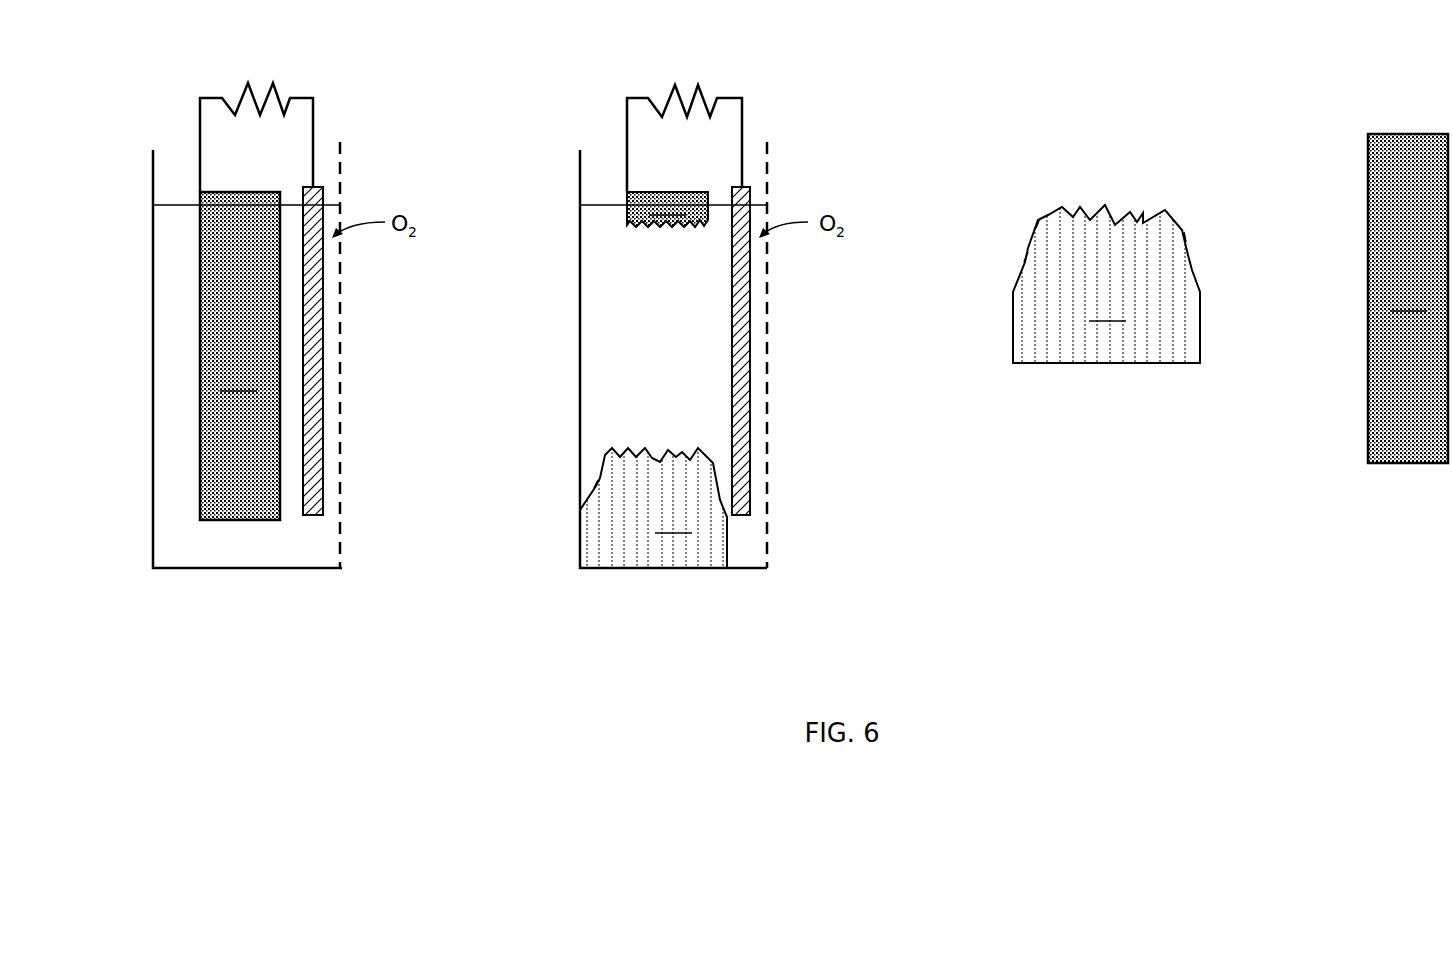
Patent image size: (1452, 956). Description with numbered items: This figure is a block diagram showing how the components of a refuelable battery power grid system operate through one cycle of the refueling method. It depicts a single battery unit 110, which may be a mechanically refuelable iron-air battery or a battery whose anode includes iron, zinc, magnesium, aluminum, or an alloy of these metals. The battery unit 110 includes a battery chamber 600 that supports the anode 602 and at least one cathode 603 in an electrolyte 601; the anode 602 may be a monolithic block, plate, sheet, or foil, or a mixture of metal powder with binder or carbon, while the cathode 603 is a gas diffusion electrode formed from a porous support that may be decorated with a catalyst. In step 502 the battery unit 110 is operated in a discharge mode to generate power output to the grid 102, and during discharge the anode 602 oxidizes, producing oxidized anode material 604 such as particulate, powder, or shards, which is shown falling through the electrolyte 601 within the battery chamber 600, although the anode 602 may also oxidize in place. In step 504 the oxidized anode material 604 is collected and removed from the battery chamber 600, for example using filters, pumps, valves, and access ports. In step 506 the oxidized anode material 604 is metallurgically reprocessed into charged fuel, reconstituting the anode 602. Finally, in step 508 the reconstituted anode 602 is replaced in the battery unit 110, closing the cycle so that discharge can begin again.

The grid 102 is at (314, 77).
The battery unit 110 is at (352, 112).
The battery chamber 600 is at (341, 184).
The electrolyte 601 is at (176, 272).
The anode 602 is at (824, 327).
The cathode 603 is at (322, 331).
The oxidized anode material 604 is at (890, 384).
The step 502 is at (390, 345).
The step 504 is at (810, 345).
The step 506 is at (1210, 345).
The step 508 is at (1417, 485).